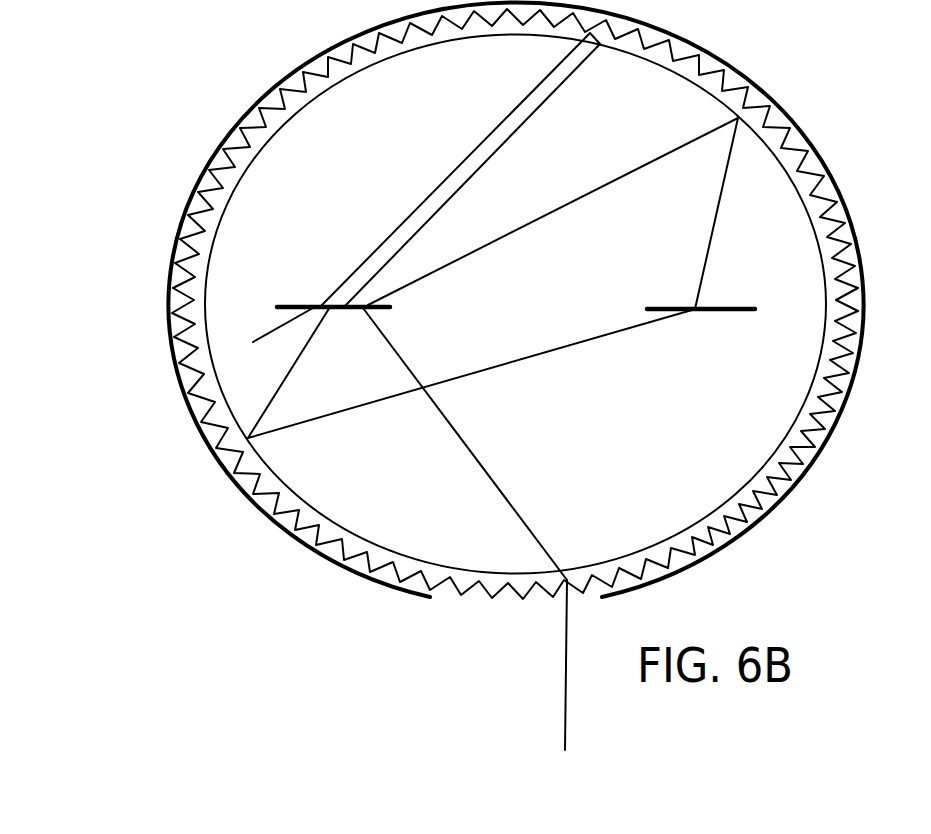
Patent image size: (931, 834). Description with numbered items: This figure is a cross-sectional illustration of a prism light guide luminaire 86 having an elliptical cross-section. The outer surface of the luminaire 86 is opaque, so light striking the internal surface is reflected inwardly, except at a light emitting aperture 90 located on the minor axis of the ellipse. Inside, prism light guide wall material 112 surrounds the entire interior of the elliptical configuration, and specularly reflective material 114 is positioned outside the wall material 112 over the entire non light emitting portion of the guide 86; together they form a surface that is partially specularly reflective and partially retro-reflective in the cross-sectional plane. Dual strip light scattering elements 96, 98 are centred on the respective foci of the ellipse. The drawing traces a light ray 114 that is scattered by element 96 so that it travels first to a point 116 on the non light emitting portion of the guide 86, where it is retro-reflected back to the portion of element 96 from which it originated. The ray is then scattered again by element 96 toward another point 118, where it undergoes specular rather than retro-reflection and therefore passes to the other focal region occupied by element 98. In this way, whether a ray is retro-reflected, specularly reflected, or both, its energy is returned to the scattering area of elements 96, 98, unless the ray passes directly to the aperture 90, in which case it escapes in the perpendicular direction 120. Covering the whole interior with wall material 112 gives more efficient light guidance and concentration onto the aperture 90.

The prism light guide luminaire 86 is at (170, 489).
The light emitting aperture 90 is at (493, 612).
The light scattering element 96 is at (293, 303).
The light scattering element 98 is at (722, 302).
The prism light guide wall material 112 is at (297, 507).
The specularly reflective material 114 is at (300, 63).
The point 116 is at (608, 58).
The point 118 is at (215, 362).
The perpendicular direction 120 is at (561, 684).